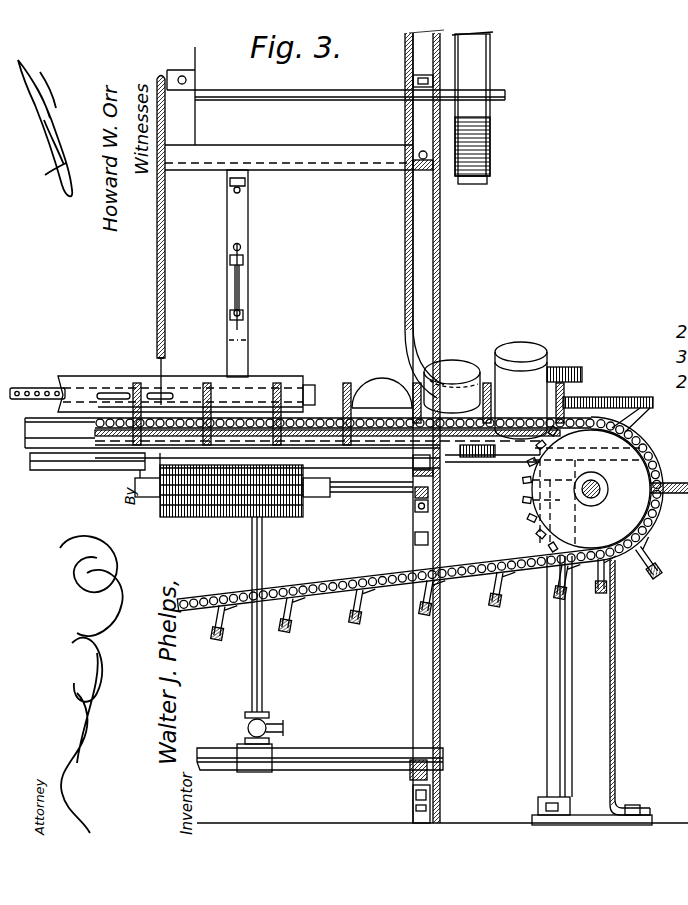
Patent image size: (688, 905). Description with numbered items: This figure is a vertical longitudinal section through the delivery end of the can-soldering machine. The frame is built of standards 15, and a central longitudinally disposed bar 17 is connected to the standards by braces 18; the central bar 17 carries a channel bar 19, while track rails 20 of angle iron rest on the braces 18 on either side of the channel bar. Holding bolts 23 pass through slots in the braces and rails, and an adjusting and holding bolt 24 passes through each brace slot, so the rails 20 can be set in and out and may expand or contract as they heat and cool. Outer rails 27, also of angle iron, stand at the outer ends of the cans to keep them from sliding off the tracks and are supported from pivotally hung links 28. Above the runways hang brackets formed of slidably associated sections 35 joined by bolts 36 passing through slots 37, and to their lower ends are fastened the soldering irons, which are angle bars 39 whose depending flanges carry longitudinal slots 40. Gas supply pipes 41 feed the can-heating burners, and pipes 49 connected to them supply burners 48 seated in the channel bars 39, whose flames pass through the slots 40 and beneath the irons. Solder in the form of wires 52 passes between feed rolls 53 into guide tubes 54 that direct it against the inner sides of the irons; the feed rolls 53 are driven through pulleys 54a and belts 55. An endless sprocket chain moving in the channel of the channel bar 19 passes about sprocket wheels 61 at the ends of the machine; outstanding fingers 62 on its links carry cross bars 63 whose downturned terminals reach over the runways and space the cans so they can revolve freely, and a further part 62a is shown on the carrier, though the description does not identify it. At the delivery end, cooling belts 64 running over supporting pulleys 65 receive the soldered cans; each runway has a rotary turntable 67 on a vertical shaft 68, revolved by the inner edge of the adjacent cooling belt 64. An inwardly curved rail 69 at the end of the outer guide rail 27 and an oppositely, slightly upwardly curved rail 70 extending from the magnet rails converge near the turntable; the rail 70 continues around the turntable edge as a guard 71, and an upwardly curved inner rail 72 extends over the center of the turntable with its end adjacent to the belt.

The standards 15 is at (425, 694).
The central bar 17 is at (165, 447).
The braces 18 is at (413, 520).
The channel bar 19 is at (318, 412).
The track rails 20 is at (368, 486).
The holding bolts 23 is at (414, 493).
The adjusting and holding bolt 24 is at (413, 508).
The rails 27 is at (72, 432).
The links 28 is at (405, 240).
The bracket sections 35 is at (246, 240).
The bolts 36 is at (241, 312).
The slots 37 is at (236, 292).
The angle bars 39 is at (80, 380).
The slots 40 is at (112, 395).
The gas supply pipes 41 is at (340, 757).
The burners 48 is at (37, 382).
The pipes 49 is at (263, 672).
The solder wires 52 is at (163, 374).
The feed rolls 53 is at (207, 100).
The guide tubes 54 is at (184, 215).
The pulleys 54a is at (491, 140).
The belts 55 is at (468, 63).
The sprocket wheels 61 is at (591, 489).
The fingers 62 is at (425, 385).
The can holders 62a is at (290, 613).
The cross bars 63 is at (432, 585).
The cooling belts 64 is at (105, 462).
The supporting pulleys 65 is at (225, 516).
The rotary turntable 67 is at (490, 458).
The vertical shaft 68 is at (550, 675).
The inwardly curved rail 69 is at (470, 466).
The oppositely curved rail 70 is at (520, 398).
The guard 71 is at (606, 398).
The inner rail 72 is at (566, 374).